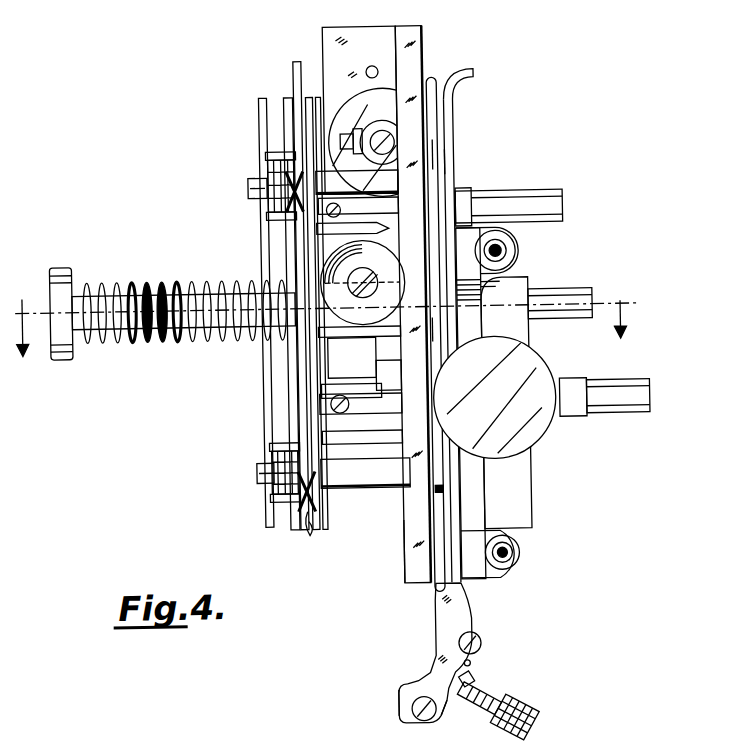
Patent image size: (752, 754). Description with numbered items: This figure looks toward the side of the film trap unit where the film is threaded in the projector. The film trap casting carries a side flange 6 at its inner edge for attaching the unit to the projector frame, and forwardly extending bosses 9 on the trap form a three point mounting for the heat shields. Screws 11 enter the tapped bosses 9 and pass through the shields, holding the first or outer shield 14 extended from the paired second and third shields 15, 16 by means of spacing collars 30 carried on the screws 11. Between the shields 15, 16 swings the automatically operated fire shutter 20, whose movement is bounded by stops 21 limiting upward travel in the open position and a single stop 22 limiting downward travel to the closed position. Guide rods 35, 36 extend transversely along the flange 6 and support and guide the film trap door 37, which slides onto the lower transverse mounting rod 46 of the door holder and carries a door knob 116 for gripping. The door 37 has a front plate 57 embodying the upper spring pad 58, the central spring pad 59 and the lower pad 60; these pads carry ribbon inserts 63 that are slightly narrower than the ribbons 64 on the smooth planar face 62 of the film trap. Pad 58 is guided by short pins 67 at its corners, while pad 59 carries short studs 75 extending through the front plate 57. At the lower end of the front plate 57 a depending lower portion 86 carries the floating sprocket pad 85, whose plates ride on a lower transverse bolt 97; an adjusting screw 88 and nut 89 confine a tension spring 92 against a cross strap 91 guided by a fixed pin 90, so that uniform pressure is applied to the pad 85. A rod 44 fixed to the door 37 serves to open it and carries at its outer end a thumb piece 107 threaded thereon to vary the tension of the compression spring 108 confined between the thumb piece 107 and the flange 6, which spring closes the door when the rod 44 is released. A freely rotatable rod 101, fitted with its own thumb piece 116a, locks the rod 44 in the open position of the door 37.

The side flange 6 is at (378, 30).
The forwardly extending bosses 9 is at (336, 492).
The screws 11 is at (252, 185).
The first or outer shield 14 is at (265, 359).
The second shield 15 is at (298, 390).
The third shield 16 is at (316, 406).
The fire shutter 20 is at (305, 423).
The stops 21 is at (288, 189).
The stop 22 is at (305, 514).
The spacing collars 30 is at (279, 173).
The upper guide rod 35 is at (562, 198).
The lower guide rod 36 is at (648, 403).
The film trap door 37 is at (451, 161).
The rod 44 is at (236, 284).
The lower transverse mounting rod 46 is at (511, 553).
The front plate 57 is at (451, 128).
The upper spring pad 58 is at (434, 156).
The central spring pad 59 is at (431, 332).
The lower pad 60 is at (434, 546).
The smooth planar face 62 is at (418, 34).
The ribbon inserts 63 is at (427, 478).
The ribbons 64 is at (430, 58).
The short pins 67 is at (442, 104).
The short studs 75 is at (437, 488).
The sprocket pad 85 is at (465, 611).
The depending lower portion 86 is at (393, 699).
The adjusting screw 88 is at (459, 681).
The nut 89 is at (523, 722).
The fixed pin 90 is at (464, 662).
The cross strap 91 is at (436, 707).
The tension spring 92 is at (473, 699).
The lower transverse bolt 97 is at (416, 722).
The rod 101 is at (370, 318).
The thumb piece 107 is at (60, 354).
The compression spring 108 is at (135, 338).
The door knob 116 is at (530, 402).
The thumb piece 116a is at (398, 268).